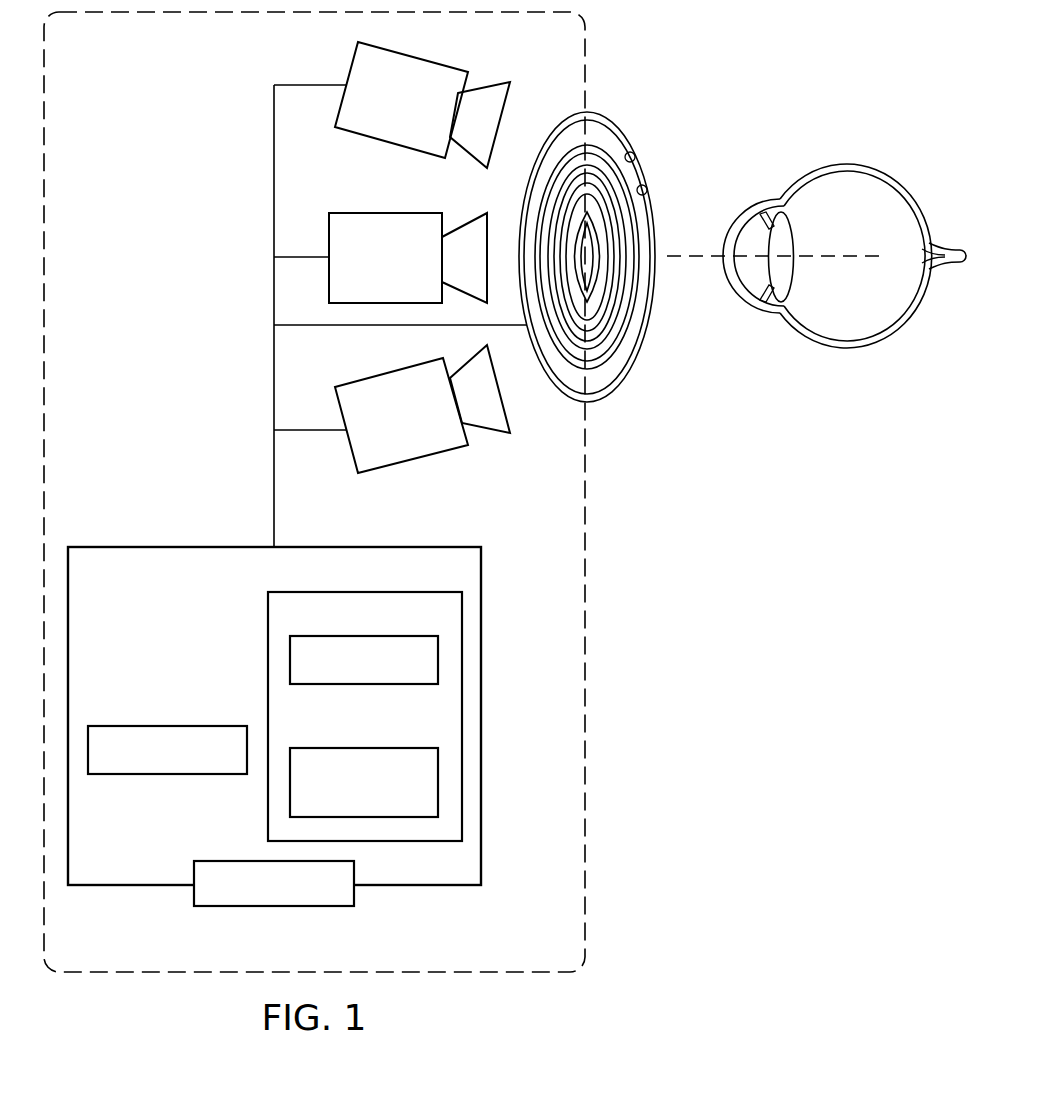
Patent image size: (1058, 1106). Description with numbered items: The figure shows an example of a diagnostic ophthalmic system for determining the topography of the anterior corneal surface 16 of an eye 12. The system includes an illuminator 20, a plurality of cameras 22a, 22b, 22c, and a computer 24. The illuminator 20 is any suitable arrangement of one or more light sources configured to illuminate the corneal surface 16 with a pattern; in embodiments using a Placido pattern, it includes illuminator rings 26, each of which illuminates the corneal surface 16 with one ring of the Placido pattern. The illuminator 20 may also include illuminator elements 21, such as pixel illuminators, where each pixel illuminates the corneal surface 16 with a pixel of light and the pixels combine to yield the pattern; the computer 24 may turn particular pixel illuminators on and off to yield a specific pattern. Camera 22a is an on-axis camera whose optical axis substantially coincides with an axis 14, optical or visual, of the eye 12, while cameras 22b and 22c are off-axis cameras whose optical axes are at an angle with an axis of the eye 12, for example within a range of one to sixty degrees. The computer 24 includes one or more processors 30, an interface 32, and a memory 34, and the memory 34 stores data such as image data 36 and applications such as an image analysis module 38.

The eye 12 is at (836, 256).
The axis 14 is at (702, 255).
The anterior corneal surface 16 is at (742, 227).
The illuminator 20 is at (614, 228).
The illuminator elements 21 is at (635, 154).
The camera 22a is at (366, 273).
The camera 22b is at (381, 115).
The camera 22c is at (381, 433).
The computer 24 is at (182, 697).
The illuminator rings 26 is at (598, 278).
The processors 30 is at (163, 774).
The interface 32 is at (275, 906).
The memory 34 is at (260, 797).
The image data 36 is at (345, 684).
The image analysis module 38 is at (381, 748).